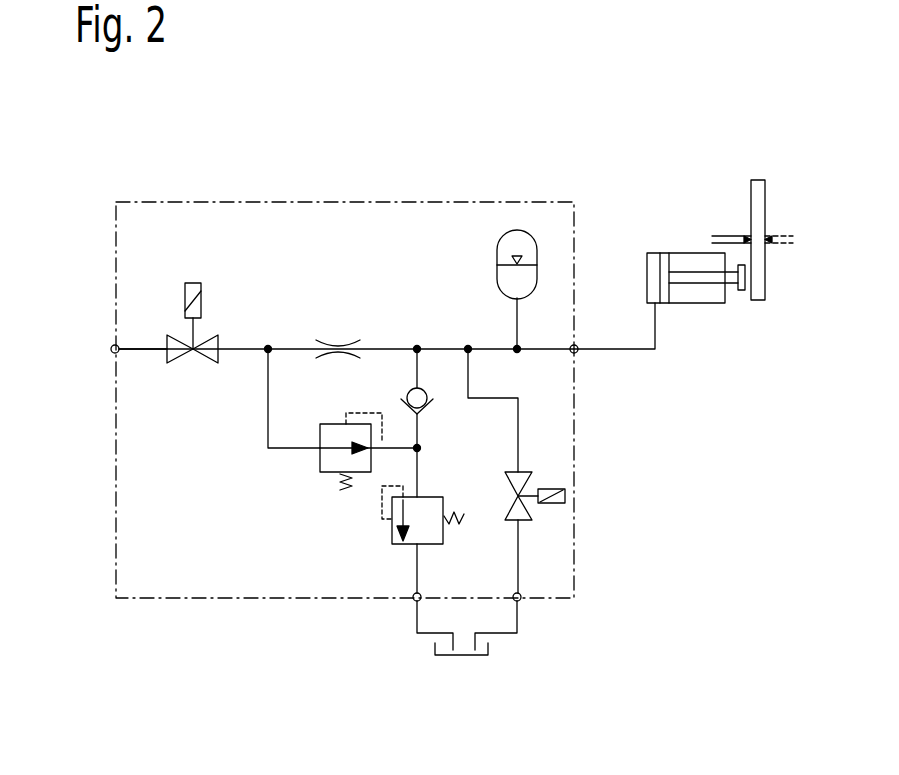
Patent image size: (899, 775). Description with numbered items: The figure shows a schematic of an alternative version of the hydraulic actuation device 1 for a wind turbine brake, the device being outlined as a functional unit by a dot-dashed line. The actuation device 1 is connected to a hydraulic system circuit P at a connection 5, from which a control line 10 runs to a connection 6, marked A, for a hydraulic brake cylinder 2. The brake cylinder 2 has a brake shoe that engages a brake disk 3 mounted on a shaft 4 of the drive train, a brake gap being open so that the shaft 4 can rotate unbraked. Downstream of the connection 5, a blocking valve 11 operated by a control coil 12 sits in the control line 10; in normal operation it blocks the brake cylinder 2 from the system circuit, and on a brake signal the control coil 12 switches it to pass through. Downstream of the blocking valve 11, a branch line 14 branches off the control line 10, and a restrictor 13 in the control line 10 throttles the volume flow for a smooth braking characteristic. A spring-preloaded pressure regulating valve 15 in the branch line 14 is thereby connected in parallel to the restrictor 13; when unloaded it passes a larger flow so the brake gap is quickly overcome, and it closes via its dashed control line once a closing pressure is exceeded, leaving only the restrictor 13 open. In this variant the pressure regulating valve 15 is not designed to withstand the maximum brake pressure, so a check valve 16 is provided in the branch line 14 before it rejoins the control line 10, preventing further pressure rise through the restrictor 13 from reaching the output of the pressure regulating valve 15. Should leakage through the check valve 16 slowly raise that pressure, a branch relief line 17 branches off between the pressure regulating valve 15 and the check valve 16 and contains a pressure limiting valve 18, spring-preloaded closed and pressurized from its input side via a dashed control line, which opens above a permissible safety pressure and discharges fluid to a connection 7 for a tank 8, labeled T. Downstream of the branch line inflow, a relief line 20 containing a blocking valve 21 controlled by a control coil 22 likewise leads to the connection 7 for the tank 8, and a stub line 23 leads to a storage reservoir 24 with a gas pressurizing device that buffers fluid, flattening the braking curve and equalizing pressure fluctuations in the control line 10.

The hydraulic actuation device 1 is at (158, 200).
The hydraulic brake cylinder 2 is at (693, 253).
The brake disk 3 is at (762, 192).
The shaft 4 is at (732, 235).
The connection 5 is at (112, 346).
The connection 6 is at (578, 351).
The connection 7 is at (413, 603).
The tank 8 is at (481, 656).
The control line 10 is at (147, 352).
The blocking valve 11 is at (190, 360).
The control coil 12 is at (198, 282).
The restrictor 13 is at (332, 338).
The branch line 14 is at (267, 417).
The pressure regulating valve 15 is at (317, 468).
The check valve 16 is at (423, 385).
The branch relief line 17 is at (410, 472).
The pressure limiting valve 18 is at (410, 547).
The relief line 20 is at (519, 422).
The blocking valve 21 is at (535, 472).
The control coil 22 is at (566, 495).
The stub line 23 is at (520, 341).
The storage reservoir 24 is at (517, 230).